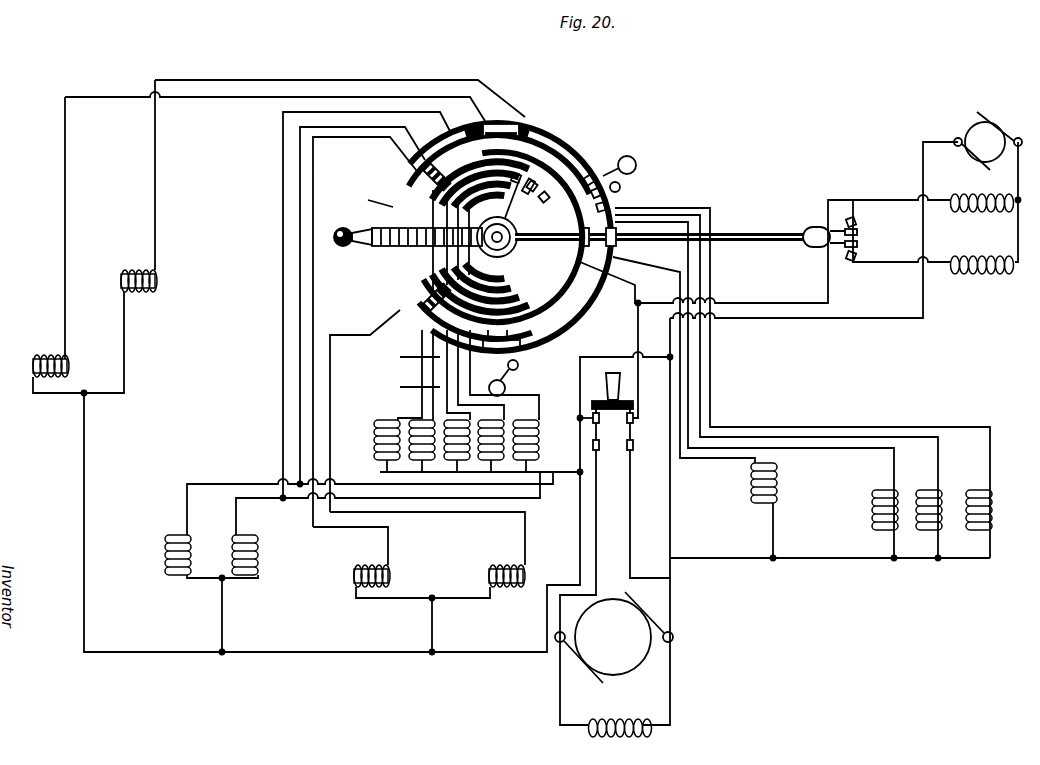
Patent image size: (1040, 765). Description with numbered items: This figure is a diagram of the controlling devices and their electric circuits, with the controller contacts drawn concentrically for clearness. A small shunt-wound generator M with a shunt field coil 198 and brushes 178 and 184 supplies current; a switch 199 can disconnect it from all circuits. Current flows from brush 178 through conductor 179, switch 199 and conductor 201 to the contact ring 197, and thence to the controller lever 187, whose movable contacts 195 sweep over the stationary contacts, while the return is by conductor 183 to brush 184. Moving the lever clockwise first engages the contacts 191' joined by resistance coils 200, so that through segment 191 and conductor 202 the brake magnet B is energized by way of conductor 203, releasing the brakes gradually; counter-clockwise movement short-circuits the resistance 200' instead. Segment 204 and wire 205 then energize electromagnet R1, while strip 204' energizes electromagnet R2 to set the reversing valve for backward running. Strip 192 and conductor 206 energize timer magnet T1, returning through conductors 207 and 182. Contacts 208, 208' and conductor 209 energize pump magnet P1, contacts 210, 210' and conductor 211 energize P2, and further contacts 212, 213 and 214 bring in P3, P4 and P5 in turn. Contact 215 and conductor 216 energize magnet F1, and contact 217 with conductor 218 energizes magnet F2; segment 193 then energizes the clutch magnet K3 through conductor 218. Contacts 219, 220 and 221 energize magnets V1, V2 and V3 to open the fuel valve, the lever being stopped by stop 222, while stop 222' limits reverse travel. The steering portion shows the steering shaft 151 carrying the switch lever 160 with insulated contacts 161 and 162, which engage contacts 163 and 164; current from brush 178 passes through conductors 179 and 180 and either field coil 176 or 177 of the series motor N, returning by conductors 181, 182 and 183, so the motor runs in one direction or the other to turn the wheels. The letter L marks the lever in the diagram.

The conductor 218 is at (250, 80).
The conductor 202 is at (416, 97).
The clutch magnet K3 is at (160, 275).
The brake magnet B is at (69, 344).
The conductor 203 is at (84, 447).
The conductor 216 is at (300, 178).
The wire 205 is at (313, 317).
The contact segment 204 is at (459, 319).
The contact strip 204' is at (431, 321).
The electromagnet F' F1 is at (170, 540).
The magnet F2 is at (245, 540).
The electromagnet R' R1 is at (352, 578).
The electromagnet R2 is at (495, 565).
The electromagnet P' P1 is at (480, 416).
The electromagnet P2 is at (481, 416).
The electromagnet P3 is at (457, 417).
The electromagnet P4 is at (422, 416).
The electromagnet P5 is at (397, 417).
The lever L is at (565, 112).
The contact ring 197 is at (505, 257).
The steering shaft 151 is at (762, 233).
The switch lever 160 is at (812, 250).
The insulated contact 161 is at (858, 231).
The insulated contact 162 is at (858, 244).
The switch contact 163 is at (847, 218).
The switch contact 164 is at (851, 262).
The conductor 181 is at (923, 158).
The conductor 180 is at (778, 307).
The field coil 176 is at (985, 209).
The field coil 177 is at (992, 272).
The electric motor N is at (990, 108).
The contact segment 193 is at (534, 172).
The contact 219 is at (560, 160).
The contact segment 191 is at (605, 150).
The contact strip 192 is at (598, 190).
The contact 220 is at (606, 203).
The contact 221 is at (636, 170).
The stop 222 is at (643, 188).
The contact 213 is at (524, 188).
The contact 214 is at (543, 202).
The contact strip 208 is at (691, 355).
The contact 210 is at (456, 196).
The contact 212 is at (472, 237).
The contact 208' is at (454, 286).
The contact 210' is at (452, 274).
The resistance coils 200 is at (392, 167).
The resistance 200' is at (390, 297).
The contacts 191' is at (359, 190).
The controller lever 187 is at (362, 230).
The movable contacts 195 is at (372, 246).
The contact 215 is at (472, 118).
The contact 217 is at (502, 124).
The stop 222' is at (524, 363).
The conductor 209 is at (406, 356).
The conductor 211 is at (406, 386).
The conductor 206 is at (684, 359).
The conductor 182 is at (595, 357).
The conductor 201 is at (638, 340).
The switch 199 is at (633, 428).
The conductor 183 is at (596, 505).
The conductor 179 is at (630, 505).
The shunt field coil 198 is at (640, 722).
The electric generator M is at (613, 637).
The commutator brush 178 is at (653, 620).
The brush 184 is at (575, 662).
The conductor 207 is at (755, 558).
The electromagnet T' T1 is at (780, 493).
The magnet V' V1 is at (878, 533).
The magnet V2 is at (928, 533).
The magnet V3 is at (978, 533).